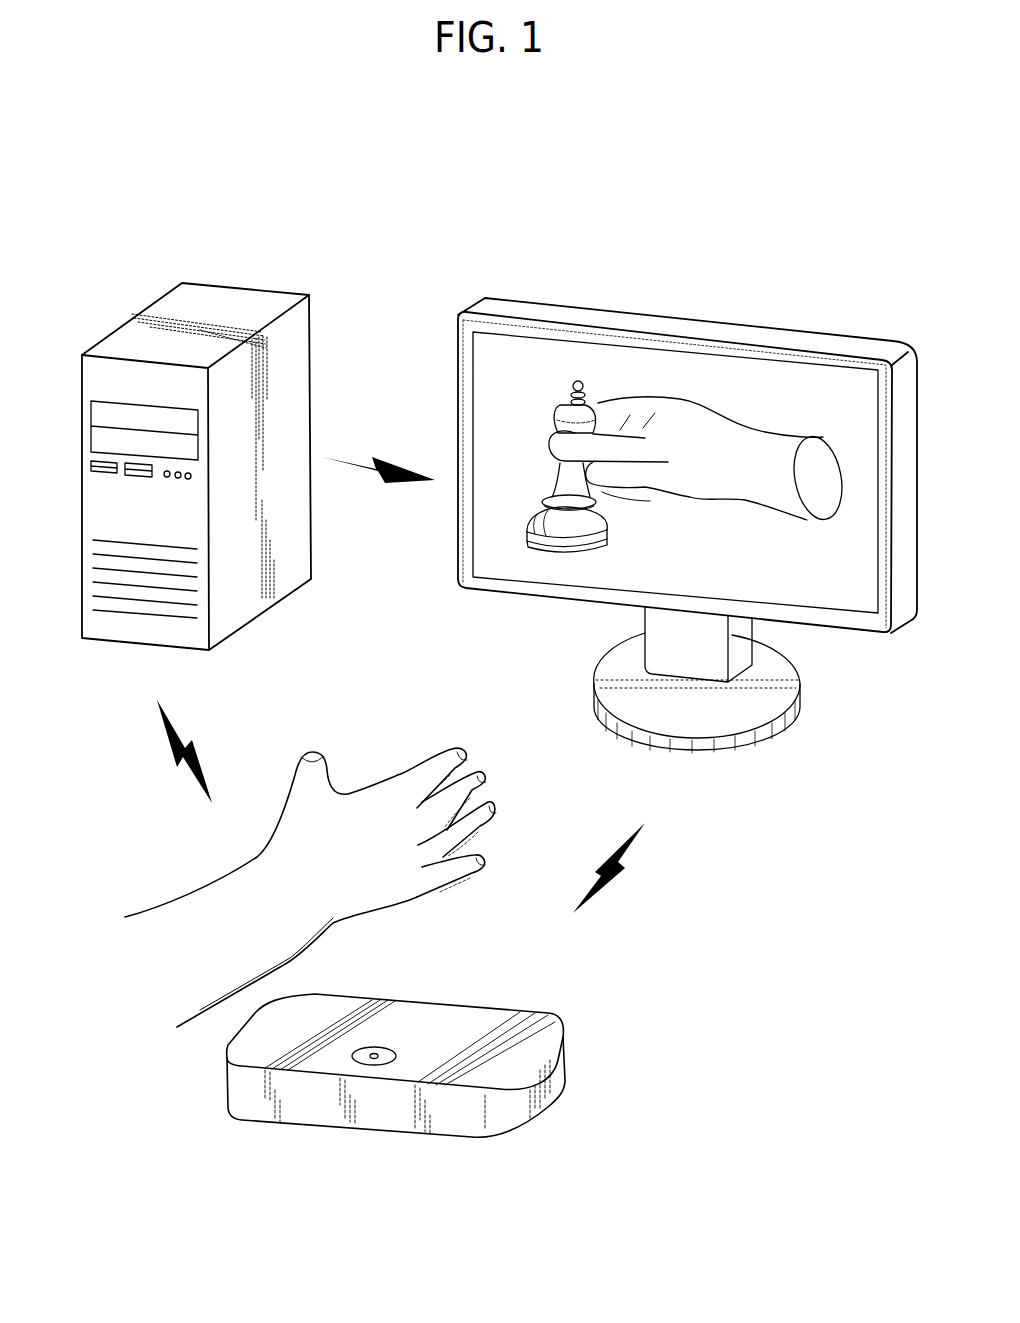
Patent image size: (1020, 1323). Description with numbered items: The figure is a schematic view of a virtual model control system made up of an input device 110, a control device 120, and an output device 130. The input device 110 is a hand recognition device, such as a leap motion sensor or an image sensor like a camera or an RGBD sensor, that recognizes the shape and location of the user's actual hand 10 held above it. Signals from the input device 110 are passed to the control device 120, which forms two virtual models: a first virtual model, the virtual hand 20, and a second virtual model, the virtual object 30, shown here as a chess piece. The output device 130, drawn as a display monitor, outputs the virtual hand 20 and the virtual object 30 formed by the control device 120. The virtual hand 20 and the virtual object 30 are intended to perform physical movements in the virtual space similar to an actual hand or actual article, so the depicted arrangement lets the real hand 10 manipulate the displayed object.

The actual hand 10 is at (372, 800).
The virtual hand 20 is at (710, 490).
The virtual object 30 is at (534, 517).
The input device 110 is at (503, 1115).
The control device 120 is at (232, 297).
The output device 130 is at (687, 486).